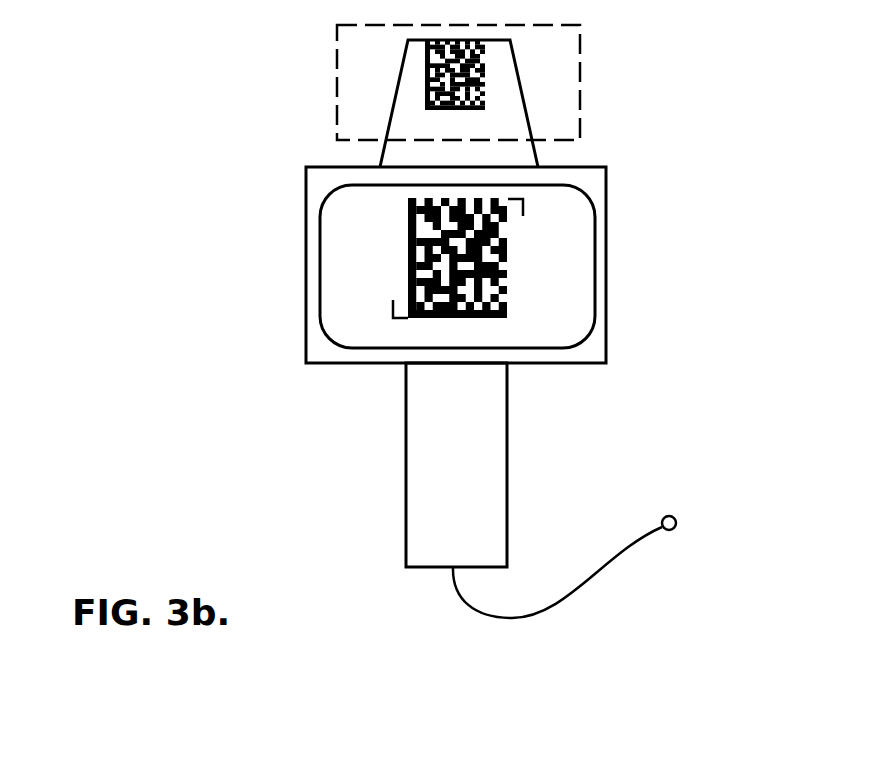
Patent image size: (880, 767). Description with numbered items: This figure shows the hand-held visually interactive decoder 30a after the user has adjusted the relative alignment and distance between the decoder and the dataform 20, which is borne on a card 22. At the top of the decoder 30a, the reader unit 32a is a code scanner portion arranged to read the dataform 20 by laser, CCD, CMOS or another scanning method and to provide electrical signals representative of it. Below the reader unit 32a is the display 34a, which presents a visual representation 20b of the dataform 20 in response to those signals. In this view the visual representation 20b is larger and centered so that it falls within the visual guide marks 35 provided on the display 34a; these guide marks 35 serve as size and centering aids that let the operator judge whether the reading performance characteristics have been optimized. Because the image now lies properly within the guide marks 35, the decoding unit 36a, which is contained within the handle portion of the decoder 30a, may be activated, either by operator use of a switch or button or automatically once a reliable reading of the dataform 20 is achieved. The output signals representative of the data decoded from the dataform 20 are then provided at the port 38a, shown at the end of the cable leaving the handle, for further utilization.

The dataform 20 is at (425, 90).
The visual representation 20b is at (408, 232).
The card 22 is at (582, 95).
The decoder 30a is at (762, 158).
The reader unit 32a is at (378, 165).
The display 34a is at (576, 307).
The visual guide marks 35 is at (523, 203).
The decoding unit 36a is at (406, 508).
The port 38a is at (674, 517).